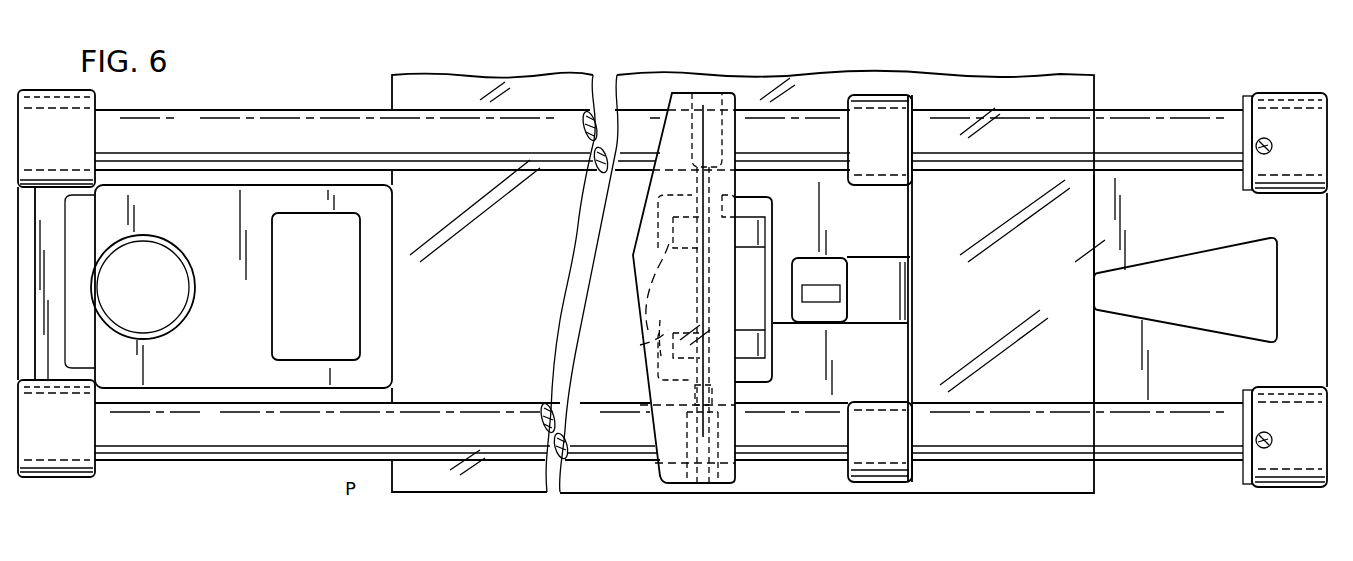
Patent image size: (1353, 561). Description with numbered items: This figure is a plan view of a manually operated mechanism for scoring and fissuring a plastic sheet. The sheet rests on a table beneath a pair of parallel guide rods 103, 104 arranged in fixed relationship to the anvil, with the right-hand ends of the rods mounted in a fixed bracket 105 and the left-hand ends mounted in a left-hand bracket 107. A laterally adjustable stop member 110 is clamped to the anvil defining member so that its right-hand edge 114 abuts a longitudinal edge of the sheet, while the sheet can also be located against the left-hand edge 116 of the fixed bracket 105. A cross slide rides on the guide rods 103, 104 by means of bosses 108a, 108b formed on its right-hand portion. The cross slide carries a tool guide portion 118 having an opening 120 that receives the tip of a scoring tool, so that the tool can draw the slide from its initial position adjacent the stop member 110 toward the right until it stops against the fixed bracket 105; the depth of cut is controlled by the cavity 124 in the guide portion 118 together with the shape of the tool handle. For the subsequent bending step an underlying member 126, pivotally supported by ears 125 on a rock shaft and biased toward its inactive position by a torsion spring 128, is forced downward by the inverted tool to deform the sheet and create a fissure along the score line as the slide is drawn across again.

The guide rod 103 is at (282, 115).
The guide rod 104 is at (265, 462).
The fixed bracket 105 is at (1167, 216).
The left-hand bracket 107 is at (85, 478).
The boss 108a is at (885, 482).
The boss 108b is at (888, 95).
The adjustable stop member 110 is at (236, 221).
The right-hand edge 114 is at (395, 240).
The left-hand edge 116 is at (1094, 290).
The tool guide portion 118 is at (905, 222).
The opening 120 is at (840, 297).
The cavity 124 is at (905, 310).
The ear 125 is at (660, 340).
The underlying member 126 is at (770, 290).
The torsion spring 128 is at (772, 335).